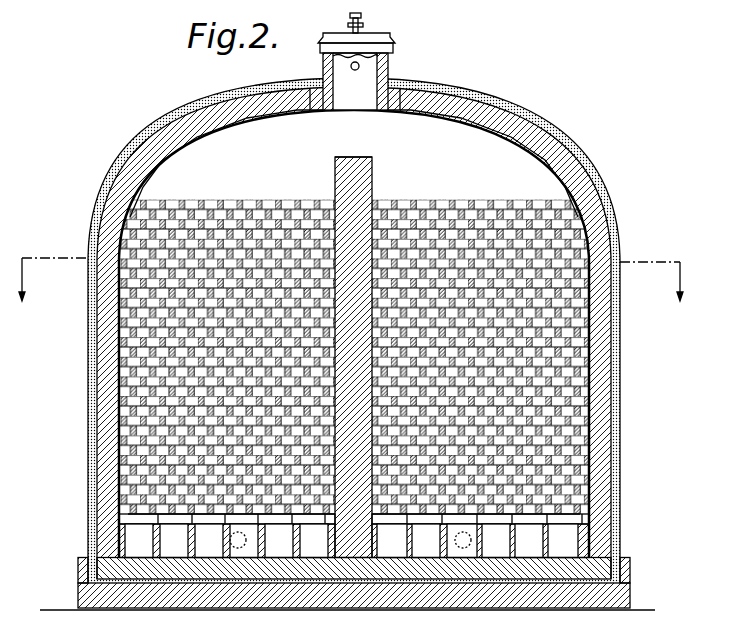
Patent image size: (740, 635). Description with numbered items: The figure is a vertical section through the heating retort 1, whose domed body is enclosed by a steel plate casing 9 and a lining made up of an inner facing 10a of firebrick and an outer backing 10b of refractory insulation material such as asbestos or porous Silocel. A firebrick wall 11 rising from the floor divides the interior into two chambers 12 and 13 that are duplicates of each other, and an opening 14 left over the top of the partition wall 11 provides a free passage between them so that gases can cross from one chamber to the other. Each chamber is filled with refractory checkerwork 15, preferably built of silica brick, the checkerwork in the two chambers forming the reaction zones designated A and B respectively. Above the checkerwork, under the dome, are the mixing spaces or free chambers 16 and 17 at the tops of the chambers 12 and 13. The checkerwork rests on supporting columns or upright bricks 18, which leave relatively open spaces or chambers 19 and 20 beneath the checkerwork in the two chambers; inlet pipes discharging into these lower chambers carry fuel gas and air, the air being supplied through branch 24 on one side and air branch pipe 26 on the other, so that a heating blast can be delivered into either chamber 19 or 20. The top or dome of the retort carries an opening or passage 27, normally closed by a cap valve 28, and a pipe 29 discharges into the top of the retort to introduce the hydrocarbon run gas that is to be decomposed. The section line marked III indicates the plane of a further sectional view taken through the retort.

The furnace 1 is at (86, 223).
The outer casing 9 is at (88, 350).
The refractory lining 10a is at (108, 408).
The insulating layer 10b is at (97, 375).
The partition wall 11 is at (340, 180).
The left checkerwork chamber 12 is at (227, 346).
The right checkerwork chamber 13 is at (480, 347).
The passage over partition 14 is at (353, 143).
The checker brick 15 is at (354, 346).
The left upper space 16 is at (226, 163).
The right upper space 17 is at (481, 163).
The supporting blocks 18 is at (118, 542).
The left supporting blocks 19 is at (210, 550).
The right supporting blocks 20 is at (565, 557).
The left port 24 is at (228, 629).
The right port 26 is at (471, 630).
The outlet pipe 27 is at (355, 81).
The cover 28 is at (390, 34).
The opening 29 is at (362, 67).
The chamber A is at (125, 480).
The chamber B is at (580, 468).
The section line III is at (346, 292).